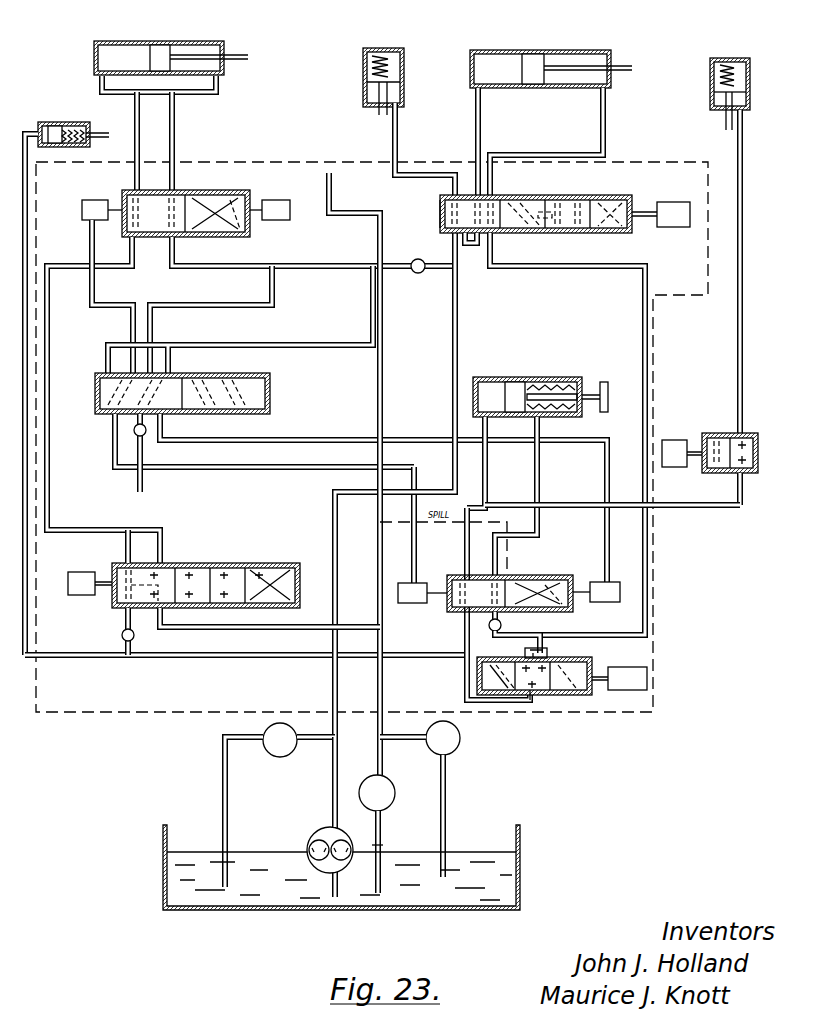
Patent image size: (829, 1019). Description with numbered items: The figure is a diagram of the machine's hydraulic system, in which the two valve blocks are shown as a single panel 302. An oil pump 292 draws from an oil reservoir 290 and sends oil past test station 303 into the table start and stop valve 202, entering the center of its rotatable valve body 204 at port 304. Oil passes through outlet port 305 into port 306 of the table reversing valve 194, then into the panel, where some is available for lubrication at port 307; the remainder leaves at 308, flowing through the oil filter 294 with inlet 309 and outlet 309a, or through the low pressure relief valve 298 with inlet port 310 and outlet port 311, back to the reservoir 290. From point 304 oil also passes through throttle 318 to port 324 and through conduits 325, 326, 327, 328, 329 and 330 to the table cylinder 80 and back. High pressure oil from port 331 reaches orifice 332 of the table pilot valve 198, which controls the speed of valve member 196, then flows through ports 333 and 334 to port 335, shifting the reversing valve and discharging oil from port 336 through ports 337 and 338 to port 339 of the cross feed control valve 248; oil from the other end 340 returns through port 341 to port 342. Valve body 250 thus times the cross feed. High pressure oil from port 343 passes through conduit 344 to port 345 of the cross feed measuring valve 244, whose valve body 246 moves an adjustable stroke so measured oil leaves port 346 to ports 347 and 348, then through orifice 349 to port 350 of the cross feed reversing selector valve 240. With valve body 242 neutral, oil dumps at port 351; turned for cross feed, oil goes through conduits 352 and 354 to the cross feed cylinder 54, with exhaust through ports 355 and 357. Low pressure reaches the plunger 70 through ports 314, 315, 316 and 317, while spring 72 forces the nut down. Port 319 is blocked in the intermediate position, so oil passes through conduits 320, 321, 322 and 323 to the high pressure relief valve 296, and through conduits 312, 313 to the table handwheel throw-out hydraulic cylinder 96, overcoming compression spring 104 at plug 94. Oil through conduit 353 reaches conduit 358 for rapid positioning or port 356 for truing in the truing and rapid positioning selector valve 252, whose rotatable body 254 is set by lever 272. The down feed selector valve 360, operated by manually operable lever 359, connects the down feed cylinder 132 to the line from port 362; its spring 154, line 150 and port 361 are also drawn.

The hydraulic cylinder 54 is at (572, 50).
The plunger 70 is at (385, 48).
The spring 72 is at (402, 58).
The table cylinder 80 is at (140, 41).
The plug 94 is at (74, 122).
The table handwheel throw-out hydraulic cylinder 96 is at (60, 122).
The compression spring 104 is at (78, 147).
The down feed cylinder 132 is at (733, 58).
The conduit 150 is at (712, 100).
The spring 154 is at (746, 76).
The table reversing valve 194 is at (188, 206).
The valve member 196 is at (242, 232).
The table pilot valve 198 is at (266, 372).
The table start and stop valve 202 is at (179, 569).
The valve body 204 is at (262, 565).
The cross feed reversing selector valve 240 is at (626, 198).
The valve body 242 is at (536, 203).
The cross feed measuring valve 244 is at (562, 377).
The valve body 246 is at (536, 377).
The cross feed control valve 248 is at (531, 585).
The valve body 250 is at (578, 609).
The truing and rapid positioning selector valve 252 is at (526, 702).
The rotatable body 254 is at (555, 696).
The rapid positioning and truing selector lever 272 is at (648, 678).
The oil reservoir 290 is at (250, 912).
The oil pump 292 is at (307, 842).
The oil filter 294 is at (396, 793).
The high pressure relief valve 296 is at (275, 723).
The low pressure relief valve 298 is at (461, 738).
The panel 302 is at (170, 713).
The test station 303 is at (120, 634).
The port 304 is at (120, 598).
The outlet port 305 is at (158, 622).
The port 306 is at (175, 256).
The port 307 is at (332, 210).
The panel outlet 308 is at (381, 716).
The inlet 309 is at (381, 778).
The outlet 309a is at (383, 845).
The inlet port 310 is at (416, 736).
The outlet port 311 is at (447, 780).
The conduit 312 is at (38, 660).
The conduit 313 is at (30, 128).
The port 314 is at (452, 238).
The port 315 is at (440, 192).
The port 316 is at (397, 162).
The port 317 is at (398, 110).
The throttle 318 is at (162, 556).
The port 319 is at (112, 566).
The conduit 320 is at (330, 812).
The conduit 321 is at (338, 745).
The conduit 322 is at (294, 744).
The conduit 323 is at (262, 752).
The port 324 is at (135, 262).
The conduit 325 is at (128, 192).
The conduit 326 is at (139, 162).
The conduit 327 is at (98, 80).
The conduit 328 is at (222, 82).
The conduit 329 is at (175, 162).
The conduit 330 is at (186, 192).
The port 331 is at (330, 712).
The orifice 332 is at (138, 452).
The port 333 is at (134, 433).
The port 334 is at (152, 345).
The port 335 is at (284, 221).
The port 336 is at (82, 210).
The port 337 is at (130, 345).
The port 338 is at (110, 422).
The port 339 is at (412, 580).
The end 340 is at (612, 582).
The port 341 is at (162, 425).
The port 342 is at (175, 368).
The port 343 is at (462, 618).
The conduit 344 is at (455, 572).
The port 345 is at (480, 436).
The port 346 is at (534, 440).
The port 347 is at (499, 572).
The port 348 is at (502, 624).
The orifice 349 is at (490, 632).
The port 350 is at (492, 240).
The port 351 is at (482, 248).
The conduit 352 is at (512, 192).
The port 353 is at (540, 698).
The conduit 354 is at (606, 94).
The port 355 is at (480, 90).
The port 356 is at (547, 654).
The port 357 is at (488, 192).
The conduit 358 is at (525, 653).
The manually operable lever 359 is at (672, 440).
The down feed selector valve 360 is at (718, 432).
The conduit 361 is at (716, 478).
The port 362 is at (652, 510).